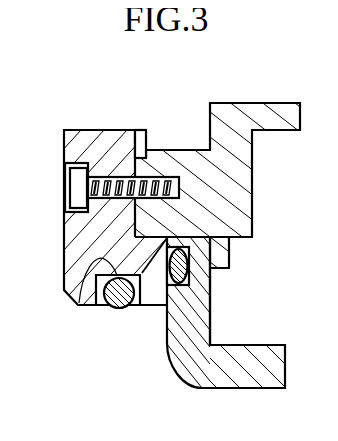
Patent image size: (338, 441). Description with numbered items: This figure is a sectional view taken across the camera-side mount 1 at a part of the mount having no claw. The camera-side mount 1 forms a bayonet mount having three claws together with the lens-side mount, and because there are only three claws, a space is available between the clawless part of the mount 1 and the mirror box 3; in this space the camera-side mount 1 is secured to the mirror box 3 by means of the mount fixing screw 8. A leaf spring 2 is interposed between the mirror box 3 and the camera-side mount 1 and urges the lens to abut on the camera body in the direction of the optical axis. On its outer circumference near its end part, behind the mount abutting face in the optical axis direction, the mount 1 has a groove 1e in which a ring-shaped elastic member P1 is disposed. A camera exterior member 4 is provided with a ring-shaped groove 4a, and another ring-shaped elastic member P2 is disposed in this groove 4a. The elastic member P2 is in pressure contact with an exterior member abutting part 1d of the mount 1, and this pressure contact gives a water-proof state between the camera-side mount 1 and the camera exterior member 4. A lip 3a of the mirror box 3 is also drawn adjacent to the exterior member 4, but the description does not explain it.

The camera-side mount 1 is at (63, 265).
The exterior member abutting part 1d is at (153, 269).
The groove 1e is at (77, 307).
The leaf spring 2 is at (136, 131).
The mirror box 3 is at (175, 156).
The lip of cover member 3a is at (228, 257).
The camera exterior member 4 is at (223, 380).
The ring-shaped groove 4a is at (210, 291).
The mount fixing screw 8 is at (67, 185).
The ring-shaped elastic member P1 is at (114, 305).
The ring-shaped elastic member P2 is at (170, 269).